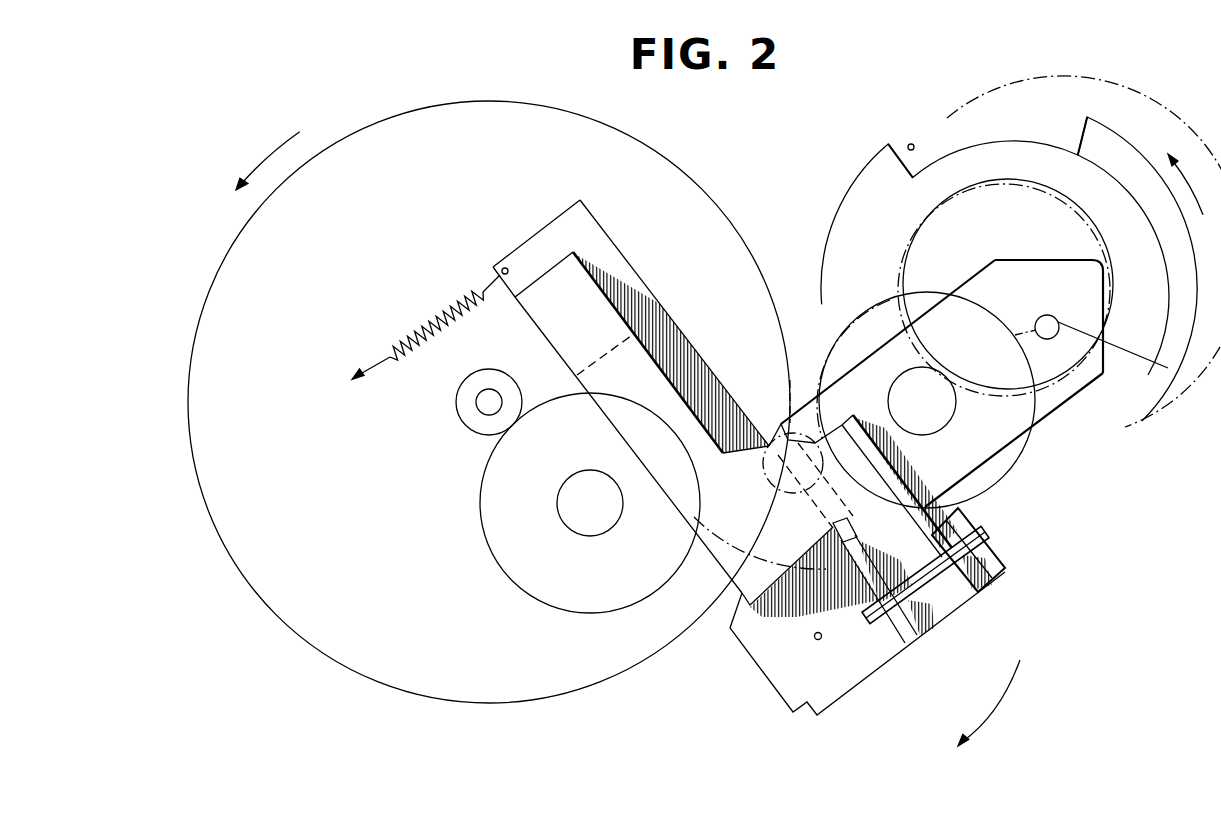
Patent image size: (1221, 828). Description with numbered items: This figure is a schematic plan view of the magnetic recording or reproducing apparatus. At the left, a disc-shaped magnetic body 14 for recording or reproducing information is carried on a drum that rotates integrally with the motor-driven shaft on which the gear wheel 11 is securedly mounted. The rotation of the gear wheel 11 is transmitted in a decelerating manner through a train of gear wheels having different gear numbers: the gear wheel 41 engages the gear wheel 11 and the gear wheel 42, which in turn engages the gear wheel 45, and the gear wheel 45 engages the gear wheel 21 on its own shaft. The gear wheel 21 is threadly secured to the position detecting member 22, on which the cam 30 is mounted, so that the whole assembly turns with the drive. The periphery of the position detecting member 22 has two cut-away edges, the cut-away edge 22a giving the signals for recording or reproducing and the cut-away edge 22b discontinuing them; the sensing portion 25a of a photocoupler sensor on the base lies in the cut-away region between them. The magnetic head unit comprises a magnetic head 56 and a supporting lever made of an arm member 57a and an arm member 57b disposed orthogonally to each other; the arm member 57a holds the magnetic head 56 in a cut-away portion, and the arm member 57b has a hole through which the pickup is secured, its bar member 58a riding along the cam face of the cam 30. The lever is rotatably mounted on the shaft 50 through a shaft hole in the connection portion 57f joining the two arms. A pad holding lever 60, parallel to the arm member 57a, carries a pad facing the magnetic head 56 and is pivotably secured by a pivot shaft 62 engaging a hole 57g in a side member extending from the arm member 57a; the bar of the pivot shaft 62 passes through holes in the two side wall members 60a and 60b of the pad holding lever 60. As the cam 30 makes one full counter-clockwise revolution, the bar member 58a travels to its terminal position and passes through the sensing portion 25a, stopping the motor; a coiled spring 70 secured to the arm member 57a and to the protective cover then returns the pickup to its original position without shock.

The magnetic body 14 is at (188, 412).
The gear wheel 11 is at (460, 412).
The gear wheel 41 is at (549, 607).
The gear wheel 42 is at (703, 548).
The coiled spring 70 is at (401, 344).
The magnetic head 56 is at (538, 282).
The arm member 57a is at (641, 291).
The pad holding lever 60 is at (667, 362).
The gear wheel 45 is at (822, 355).
The connection portion 57f is at (848, 680).
The shaft 50 is at (817, 641).
The side wall member 60b is at (917, 647).
The pivot shaft 62 is at (947, 615).
The side wall member 60a is at (988, 590).
The hole 57g is at (1008, 575).
The arm member 57b is at (1037, 432).
The gear wheel 21 is at (1108, 292).
The bar member 58a is at (1050, 330).
The position detecting member 22 is at (1158, 410).
The cut-away edge 22a is at (1074, 135).
The cut-away edge 22b is at (898, 150).
The sensing portion 25a is at (915, 145).
The cam 30 is at (1140, 188).